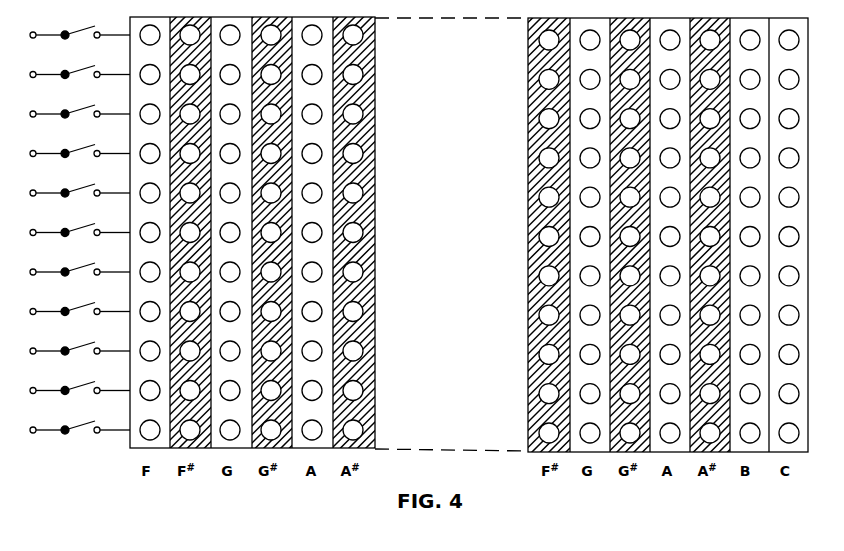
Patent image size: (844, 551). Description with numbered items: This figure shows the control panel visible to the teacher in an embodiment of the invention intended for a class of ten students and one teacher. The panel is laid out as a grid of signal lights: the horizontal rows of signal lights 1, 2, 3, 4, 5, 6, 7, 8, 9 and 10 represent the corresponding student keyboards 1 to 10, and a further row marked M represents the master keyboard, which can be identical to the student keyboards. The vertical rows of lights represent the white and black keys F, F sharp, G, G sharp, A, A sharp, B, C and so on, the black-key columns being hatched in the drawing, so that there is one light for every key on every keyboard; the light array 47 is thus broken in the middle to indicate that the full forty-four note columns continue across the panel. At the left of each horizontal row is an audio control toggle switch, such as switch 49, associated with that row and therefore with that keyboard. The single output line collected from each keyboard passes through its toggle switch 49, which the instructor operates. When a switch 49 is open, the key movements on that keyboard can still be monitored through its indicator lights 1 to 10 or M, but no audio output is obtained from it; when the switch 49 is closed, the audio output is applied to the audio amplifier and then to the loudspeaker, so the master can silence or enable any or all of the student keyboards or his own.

The key matrix board with contact holes 47 is at (142, 438).
The toggle switch 49 is at (94, 433).
The signal light row for student keyboard 1 is at (80, 29).
The signal light row for student keyboard 2 is at (80, 69).
The signal light row for student keyboard 3 is at (80, 108).
The signal light row for student keyboard 4 is at (80, 148).
The signal light row for student keyboard 5 is at (80, 187).
The signal light row for student keyboard 6 is at (80, 227).
The signal light row for student keyboard 7 is at (80, 266).
The signal light row for student keyboard 8 is at (80, 306).
The signal light row for student keyboard 9 is at (80, 345).
The signal light row for student keyboard 10 is at (80, 385).